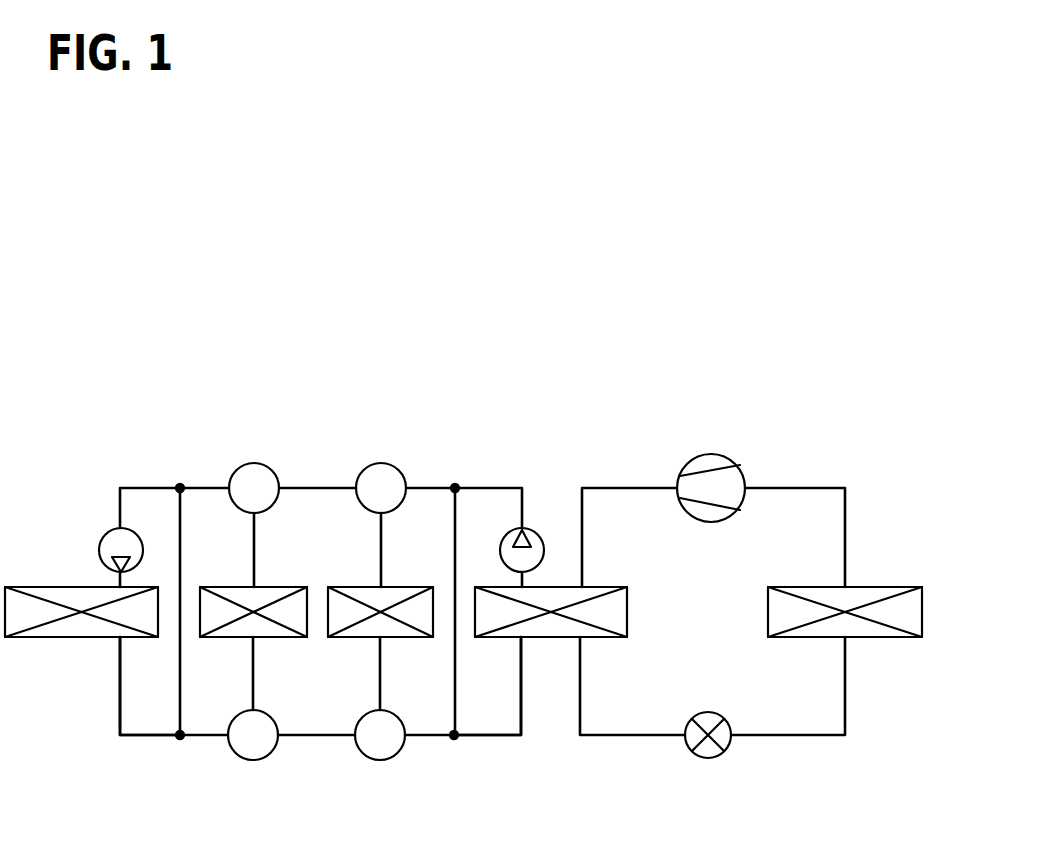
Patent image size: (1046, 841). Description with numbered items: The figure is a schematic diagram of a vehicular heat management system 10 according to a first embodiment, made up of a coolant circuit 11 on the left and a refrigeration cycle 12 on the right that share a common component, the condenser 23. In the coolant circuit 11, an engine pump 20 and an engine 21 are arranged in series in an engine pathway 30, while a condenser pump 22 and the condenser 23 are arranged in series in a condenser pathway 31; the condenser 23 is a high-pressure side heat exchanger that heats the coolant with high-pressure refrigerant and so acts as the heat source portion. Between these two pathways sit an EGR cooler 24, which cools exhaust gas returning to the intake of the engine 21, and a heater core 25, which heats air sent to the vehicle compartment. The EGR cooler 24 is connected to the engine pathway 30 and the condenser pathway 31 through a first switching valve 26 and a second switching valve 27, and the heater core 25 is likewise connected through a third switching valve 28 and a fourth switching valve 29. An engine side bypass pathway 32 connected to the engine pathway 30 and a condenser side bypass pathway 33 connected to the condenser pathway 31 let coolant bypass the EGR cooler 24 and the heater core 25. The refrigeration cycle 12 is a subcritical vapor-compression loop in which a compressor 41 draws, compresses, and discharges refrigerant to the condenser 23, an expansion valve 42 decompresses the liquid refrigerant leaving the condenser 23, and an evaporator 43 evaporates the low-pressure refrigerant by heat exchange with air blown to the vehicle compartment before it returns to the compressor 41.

The vehicular heat management system 10 is at (570, 425).
The coolant circuit 11 is at (203, 470).
The refrigeration cycle 12 is at (775, 470).
The engine pump 20 is at (98, 546).
The engine 21 is at (62, 640).
The condenser pump 22 is at (543, 541).
The condenser 23 is at (548, 637).
The EGR cooler 24 is at (272, 637).
The heater core 25 is at (363, 637).
The first switching valve 26 is at (255, 462).
The second switching valve 27 is at (253, 760).
The third switching valve 28 is at (380, 462).
The fourth switching valve 29 is at (380, 760).
The engine pathway 30 is at (117, 702).
The condenser pathway 31 is at (482, 736).
The engine side bypass pathway 32 is at (180, 677).
The condenser side bypass pathway 33 is at (452, 682).
The compressor 41 is at (712, 452).
The expansion valve 42 is at (710, 760).
The evaporator 43 is at (882, 637).